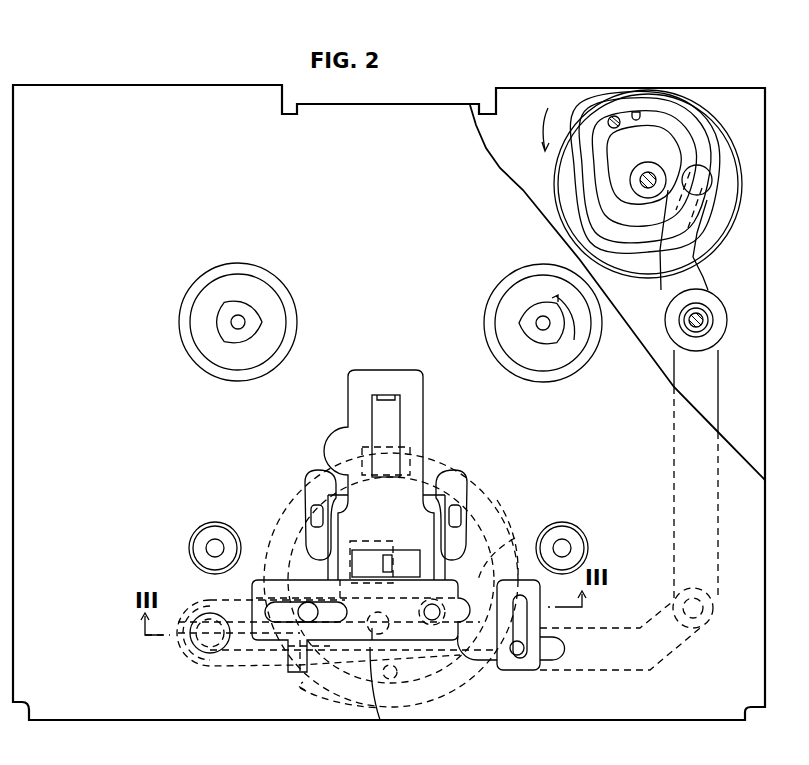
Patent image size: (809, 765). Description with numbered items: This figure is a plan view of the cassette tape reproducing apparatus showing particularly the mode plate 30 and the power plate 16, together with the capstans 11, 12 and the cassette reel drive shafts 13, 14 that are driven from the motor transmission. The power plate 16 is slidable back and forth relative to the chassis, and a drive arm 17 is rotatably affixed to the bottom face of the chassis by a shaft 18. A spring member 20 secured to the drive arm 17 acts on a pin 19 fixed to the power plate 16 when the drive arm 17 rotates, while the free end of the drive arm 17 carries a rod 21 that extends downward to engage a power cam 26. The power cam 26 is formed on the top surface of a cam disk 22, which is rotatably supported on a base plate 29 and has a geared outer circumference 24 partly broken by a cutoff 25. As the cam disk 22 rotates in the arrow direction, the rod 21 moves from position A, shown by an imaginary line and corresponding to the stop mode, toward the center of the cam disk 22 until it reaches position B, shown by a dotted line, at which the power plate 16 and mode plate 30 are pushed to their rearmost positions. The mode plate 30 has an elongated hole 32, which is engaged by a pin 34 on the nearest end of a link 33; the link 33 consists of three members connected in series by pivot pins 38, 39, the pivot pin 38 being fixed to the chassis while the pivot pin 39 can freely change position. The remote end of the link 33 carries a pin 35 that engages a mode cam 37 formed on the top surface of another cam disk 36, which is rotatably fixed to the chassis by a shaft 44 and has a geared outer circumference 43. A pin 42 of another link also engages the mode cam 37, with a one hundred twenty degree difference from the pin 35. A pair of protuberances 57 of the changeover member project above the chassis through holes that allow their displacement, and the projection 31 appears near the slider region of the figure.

The capstan 11 is at (562, 544).
The capstan 12 is at (215, 540).
The forward-drive cassette reel drive shaft 13 is at (544, 294).
The cassette reel drive shaft 14 is at (258, 310).
The power plate 16 is at (327, 558).
The drive arm 17 is at (265, 664).
The shaft 18 is at (207, 640).
The pin 19 is at (432, 620).
The spring member 20 is at (336, 648).
The rod 21 is at (347, 698).
The cam disk 22 is at (408, 475).
The geared outer circumference 24 is at (282, 522).
The cutoff 25 is at (497, 500).
The power cam 26 is at (495, 525).
The base plate 29 is at (765, 290).
The mode plate 30 is at (495, 556).
The projection 31 is at (381, 560).
The elongated hole 32 is at (545, 620).
The link 33 is at (724, 426).
The pin 34 is at (517, 656).
The pin 35 is at (712, 180).
The cam disk 36 is at (723, 147).
The mode cam 37 is at (637, 111).
The pivot pin 38 is at (705, 316).
The pivot pin 39 is at (697, 616).
The pin 42 is at (612, 117).
The geared outer circumference 43 is at (700, 103).
The shaft 44 is at (642, 168).
The protuberances 57 is at (312, 500).
The position A is at (382, 657).
The position B is at (363, 634).